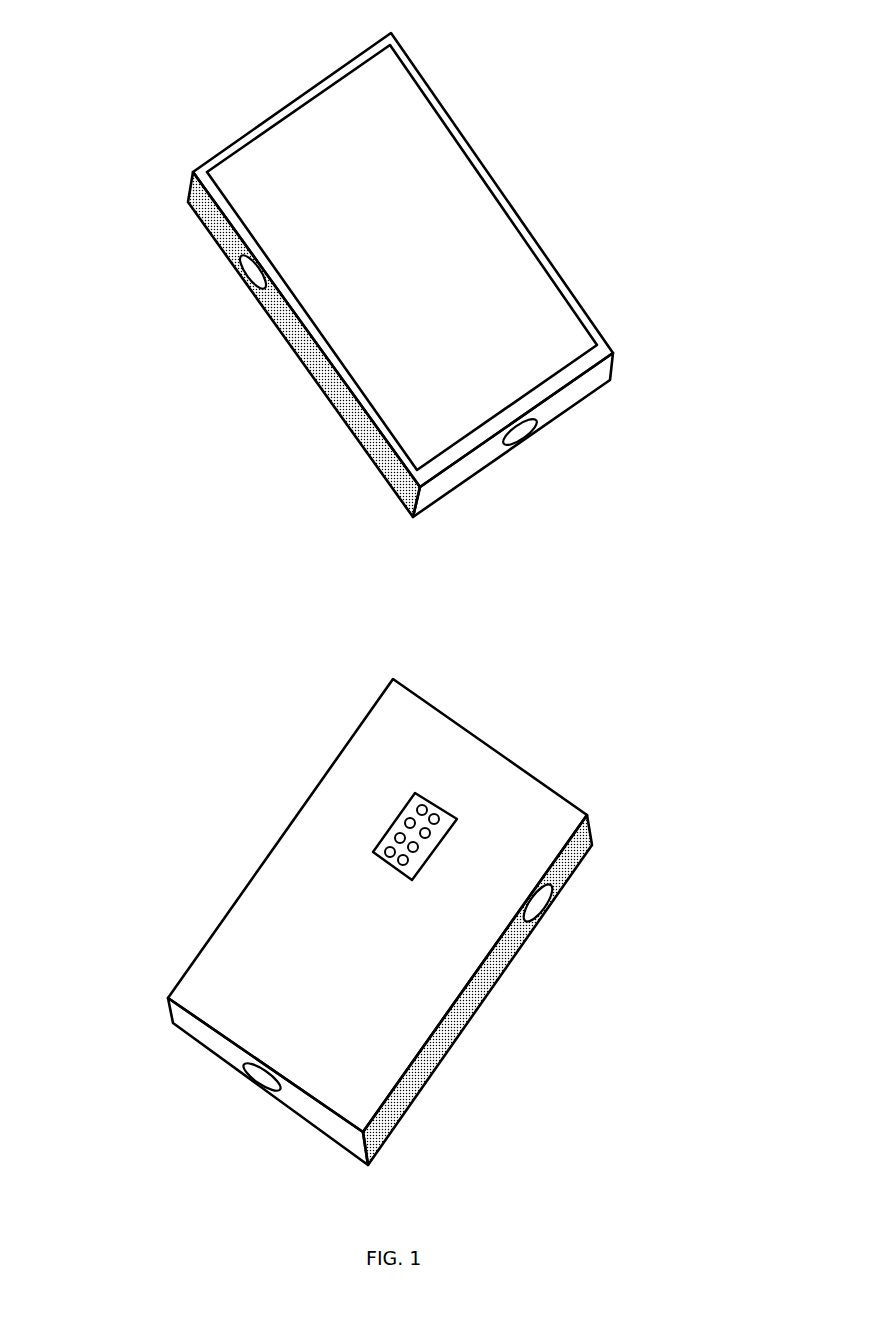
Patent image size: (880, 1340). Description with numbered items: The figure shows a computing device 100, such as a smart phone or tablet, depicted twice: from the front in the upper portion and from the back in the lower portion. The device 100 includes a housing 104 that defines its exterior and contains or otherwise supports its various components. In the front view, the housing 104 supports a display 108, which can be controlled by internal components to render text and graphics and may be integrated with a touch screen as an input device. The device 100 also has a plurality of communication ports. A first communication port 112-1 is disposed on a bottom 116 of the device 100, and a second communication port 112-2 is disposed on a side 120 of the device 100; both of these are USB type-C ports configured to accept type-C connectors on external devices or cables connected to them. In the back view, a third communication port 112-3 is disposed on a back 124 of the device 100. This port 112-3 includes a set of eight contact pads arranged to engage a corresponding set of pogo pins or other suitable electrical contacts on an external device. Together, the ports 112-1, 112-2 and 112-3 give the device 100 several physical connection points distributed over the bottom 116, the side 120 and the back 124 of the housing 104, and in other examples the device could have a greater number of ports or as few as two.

The computing device 100 is at (403, 263).
The housing 104 is at (403, 275).
The display 108 is at (505, 276).
The first communication port 112-1 is at (518, 433).
The second communication port 112-2 is at (250, 272).
The third communication port 112-3 is at (375, 852).
The bottom 116 is at (600, 378).
The side 120 is at (315, 362).
The back 124 is at (356, 889).